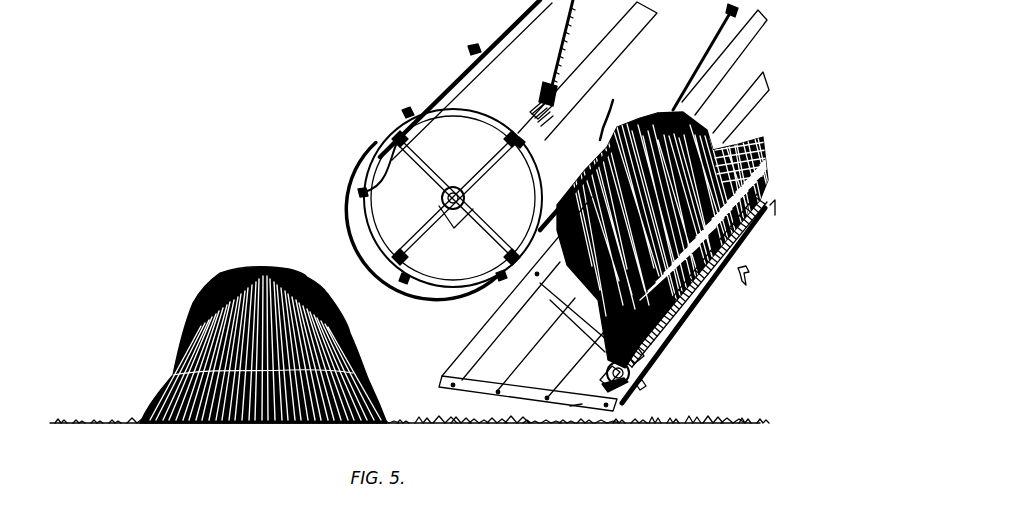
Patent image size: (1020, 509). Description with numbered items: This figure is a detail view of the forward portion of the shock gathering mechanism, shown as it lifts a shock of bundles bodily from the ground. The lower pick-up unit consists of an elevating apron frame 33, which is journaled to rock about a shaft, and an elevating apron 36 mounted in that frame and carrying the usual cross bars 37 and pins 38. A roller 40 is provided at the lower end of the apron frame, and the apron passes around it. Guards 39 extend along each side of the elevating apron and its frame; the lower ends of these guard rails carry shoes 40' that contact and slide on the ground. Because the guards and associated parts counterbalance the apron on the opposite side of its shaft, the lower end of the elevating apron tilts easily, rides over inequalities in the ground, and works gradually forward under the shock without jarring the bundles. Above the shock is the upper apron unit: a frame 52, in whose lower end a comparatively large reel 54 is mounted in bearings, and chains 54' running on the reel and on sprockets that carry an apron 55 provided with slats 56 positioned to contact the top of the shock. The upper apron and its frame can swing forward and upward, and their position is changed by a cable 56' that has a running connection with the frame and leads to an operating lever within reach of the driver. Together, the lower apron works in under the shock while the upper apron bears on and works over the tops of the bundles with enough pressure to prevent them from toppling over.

The elevating apron frame 33 is at (655, 358).
The elevating apron 36 is at (710, 303).
The cross bars 37 is at (702, 320).
The pins 38 is at (647, 388).
The guards 39 is at (487, 342).
The roller 40 is at (573, 395).
The shoes 40' is at (572, 429).
The frame 52 is at (611, 44).
The reel 54 is at (444, 203).
The chains 54' is at (360, 188).
The apron 55 is at (458, 74).
The slats 56 is at (457, 45).
The cable 56' is at (547, 53).